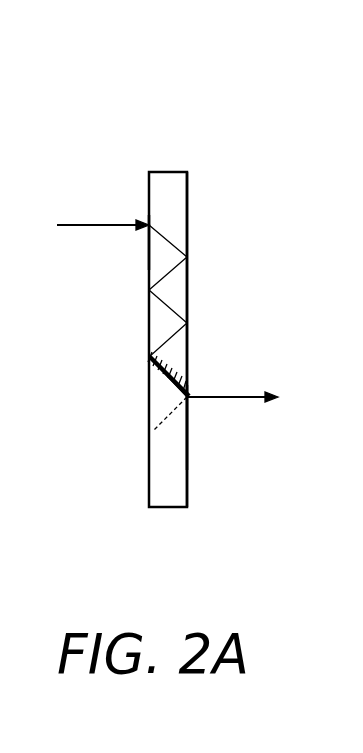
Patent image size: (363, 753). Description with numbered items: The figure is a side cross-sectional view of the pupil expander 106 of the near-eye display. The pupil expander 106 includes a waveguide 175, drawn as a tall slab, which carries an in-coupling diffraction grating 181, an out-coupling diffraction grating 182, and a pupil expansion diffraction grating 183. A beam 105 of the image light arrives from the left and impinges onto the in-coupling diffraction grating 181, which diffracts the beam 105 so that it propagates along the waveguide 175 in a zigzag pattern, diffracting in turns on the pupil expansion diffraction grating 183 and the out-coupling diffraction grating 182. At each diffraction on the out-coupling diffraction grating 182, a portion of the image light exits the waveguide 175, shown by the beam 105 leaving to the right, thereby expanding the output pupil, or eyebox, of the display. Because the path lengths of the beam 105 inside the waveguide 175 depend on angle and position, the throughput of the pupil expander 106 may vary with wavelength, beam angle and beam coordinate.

The pupil expander 106 is at (171, 143).
The beam 105 is at (88, 222).
The waveguide 175 is at (190, 195).
The in-coupling diffraction grating 181 is at (148, 260).
The out-coupling diffraction grating 182 is at (190, 455).
The pupil expansion diffraction grating 183 is at (148, 462).